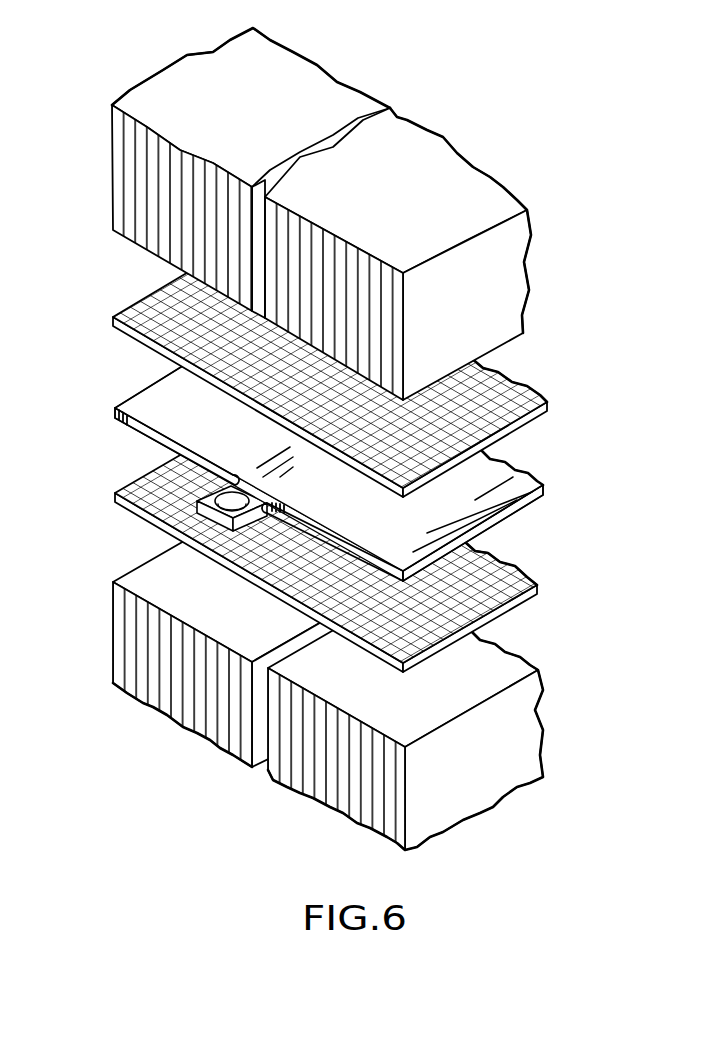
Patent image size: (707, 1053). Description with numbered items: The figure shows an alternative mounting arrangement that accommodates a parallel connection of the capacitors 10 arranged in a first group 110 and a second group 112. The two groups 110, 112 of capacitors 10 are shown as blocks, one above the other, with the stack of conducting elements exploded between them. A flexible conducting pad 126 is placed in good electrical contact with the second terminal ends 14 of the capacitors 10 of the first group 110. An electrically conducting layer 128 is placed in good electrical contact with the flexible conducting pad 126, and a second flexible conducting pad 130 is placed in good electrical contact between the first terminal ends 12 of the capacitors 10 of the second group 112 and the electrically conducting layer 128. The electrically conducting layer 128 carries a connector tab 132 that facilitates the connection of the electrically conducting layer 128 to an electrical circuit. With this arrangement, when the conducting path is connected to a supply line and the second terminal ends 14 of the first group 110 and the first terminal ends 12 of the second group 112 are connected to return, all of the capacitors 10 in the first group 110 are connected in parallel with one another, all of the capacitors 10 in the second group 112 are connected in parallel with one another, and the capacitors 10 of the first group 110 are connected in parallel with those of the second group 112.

The capacitor 10 is at (330, 425).
The first terminal end 12 is at (510, 340).
The second terminal end 14 is at (498, 663).
The first group of capacitors 110 is at (378, 676).
The second group of capacitors 112 is at (339, 200).
The flexible conducting pad 126 is at (280, 543).
The electrically conducting layer 128 is at (115, 413).
The flexible conducting pad 130 is at (110, 322).
The connector tab 132 is at (211, 524).